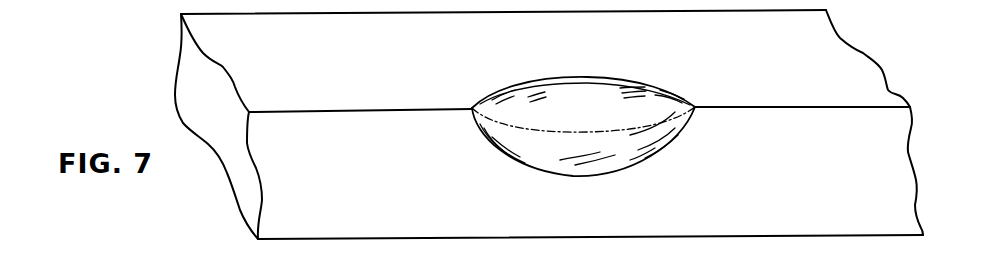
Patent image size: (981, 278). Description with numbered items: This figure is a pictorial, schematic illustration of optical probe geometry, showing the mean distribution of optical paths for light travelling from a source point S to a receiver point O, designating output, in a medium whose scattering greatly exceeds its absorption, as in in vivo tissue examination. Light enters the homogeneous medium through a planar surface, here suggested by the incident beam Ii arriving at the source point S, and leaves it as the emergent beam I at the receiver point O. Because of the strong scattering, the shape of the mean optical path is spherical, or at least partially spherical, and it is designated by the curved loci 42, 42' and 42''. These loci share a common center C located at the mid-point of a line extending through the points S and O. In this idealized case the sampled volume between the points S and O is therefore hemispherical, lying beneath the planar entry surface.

The curved locus 42 is at (583, 144).
The curved locus 42' is at (583, 136).
The curved locus 42'' is at (585, 75).
The source point S is at (472, 108).
The receiver point O is at (706, 96).
The emergent beam I is at (693, 103).
The incident beam Ii is at (472, 100).
The center C is at (574, 99).